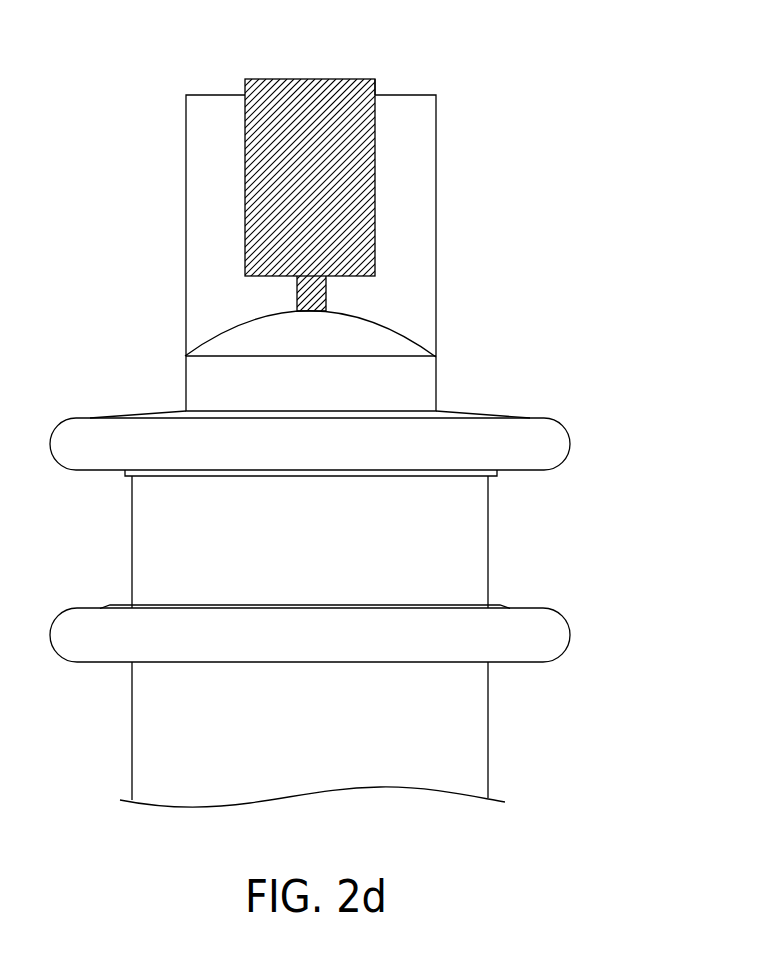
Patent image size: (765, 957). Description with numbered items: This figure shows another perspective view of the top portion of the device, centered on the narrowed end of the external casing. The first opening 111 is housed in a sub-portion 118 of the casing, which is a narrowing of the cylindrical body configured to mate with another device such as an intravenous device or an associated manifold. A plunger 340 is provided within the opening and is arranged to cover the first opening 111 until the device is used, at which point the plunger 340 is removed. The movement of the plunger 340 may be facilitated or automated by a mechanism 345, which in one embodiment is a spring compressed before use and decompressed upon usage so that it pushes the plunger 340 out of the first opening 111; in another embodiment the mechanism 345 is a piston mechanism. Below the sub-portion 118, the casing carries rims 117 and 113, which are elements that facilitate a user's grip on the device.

The plunger 340 is at (270, 92).
The first opening 111 is at (377, 94).
The sub-portion 118 is at (436, 254).
The mechanism 345 is at (408, 352).
The rim 117 is at (572, 443).
The rim 113 is at (572, 620).